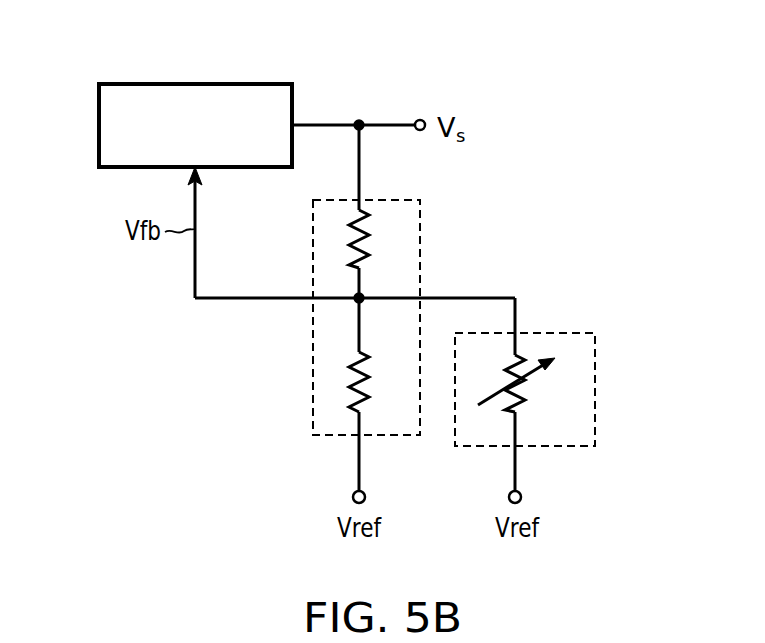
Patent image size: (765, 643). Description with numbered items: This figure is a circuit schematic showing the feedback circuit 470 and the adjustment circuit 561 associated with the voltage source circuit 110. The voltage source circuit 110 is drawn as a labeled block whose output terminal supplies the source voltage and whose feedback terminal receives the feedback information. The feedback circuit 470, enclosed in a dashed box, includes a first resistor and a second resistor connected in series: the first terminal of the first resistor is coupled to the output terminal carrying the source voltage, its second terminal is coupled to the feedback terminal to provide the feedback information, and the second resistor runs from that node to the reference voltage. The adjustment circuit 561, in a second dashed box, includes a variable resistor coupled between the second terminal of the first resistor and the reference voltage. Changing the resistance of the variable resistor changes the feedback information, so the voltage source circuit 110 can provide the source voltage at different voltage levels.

The voltage source circuit 110 is at (225, 83).
The feedback circuit 470 is at (397, 200).
The adjustment circuit 561 is at (548, 333).